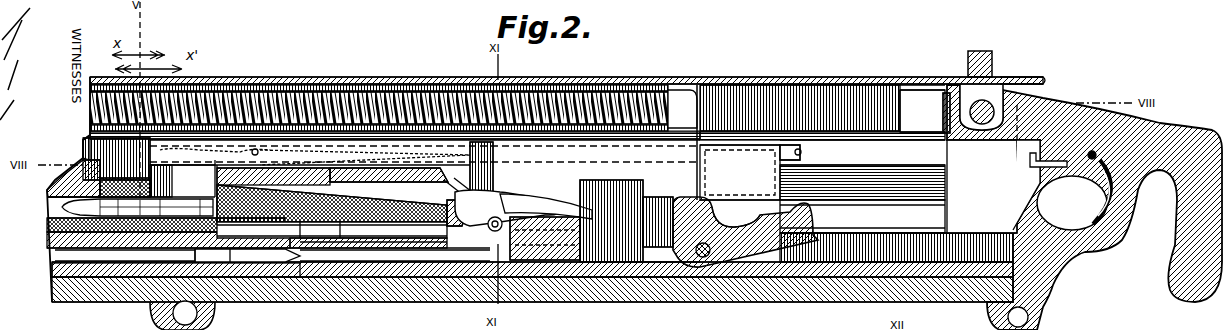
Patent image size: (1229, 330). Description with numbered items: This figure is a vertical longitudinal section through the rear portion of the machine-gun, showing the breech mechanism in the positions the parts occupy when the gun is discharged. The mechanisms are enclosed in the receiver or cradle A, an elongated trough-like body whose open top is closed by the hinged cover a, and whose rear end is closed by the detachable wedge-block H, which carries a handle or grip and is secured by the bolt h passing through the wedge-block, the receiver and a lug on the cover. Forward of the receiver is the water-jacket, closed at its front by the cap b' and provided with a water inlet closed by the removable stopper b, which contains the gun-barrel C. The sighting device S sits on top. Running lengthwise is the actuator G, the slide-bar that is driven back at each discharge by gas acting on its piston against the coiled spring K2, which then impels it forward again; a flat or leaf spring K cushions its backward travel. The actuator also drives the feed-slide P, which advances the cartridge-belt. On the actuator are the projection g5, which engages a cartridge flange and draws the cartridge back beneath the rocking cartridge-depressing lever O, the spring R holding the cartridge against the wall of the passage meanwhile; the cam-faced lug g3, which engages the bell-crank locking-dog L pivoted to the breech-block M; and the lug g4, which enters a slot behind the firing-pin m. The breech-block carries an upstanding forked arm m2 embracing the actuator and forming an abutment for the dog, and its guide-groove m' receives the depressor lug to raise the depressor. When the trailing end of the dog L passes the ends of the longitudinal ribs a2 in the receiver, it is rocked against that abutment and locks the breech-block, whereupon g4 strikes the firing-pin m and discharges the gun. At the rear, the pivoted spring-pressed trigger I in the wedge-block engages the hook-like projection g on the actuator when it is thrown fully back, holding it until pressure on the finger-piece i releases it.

The receiver or cradle A is at (853, 294).
The coiled spring K2 is at (250, 77).
The cover a is at (790, 80).
The flat or leaf spring K is at (943, 108).
The actuator G is at (337, 155).
The feed-slide P is at (83, 158).
The projection g5 is at (182, 181).
The gun-barrel C is at (176, 294).
The lower rod C' is at (272, 289).
The guide-groove m' is at (332, 210).
The closing-piece or cap b' is at (389, 183).
The firing-pin m is at (332, 274).
The spring R is at (360, 224).
The removable stopper b is at (471, 202).
The cartridge-depressing lever O is at (500, 200).
The lug or projection g4 is at (565, 215).
The upstanding arm m2 is at (705, 200).
The hook-like projection g is at (802, 153).
The longitudinal ribs a2 is at (862, 217).
The locking-dog L is at (738, 246).
The cam-faced lug or projection g3 is at (736, 214).
The breech-block M is at (660, 264).
The wedge-block H is at (1065, 106).
The bolt h is at (1015, 79).
The sighting device S is at (985, 51).
The catch-piece or trigger I is at (1072, 203).
The finger-piece i is at (1100, 207).